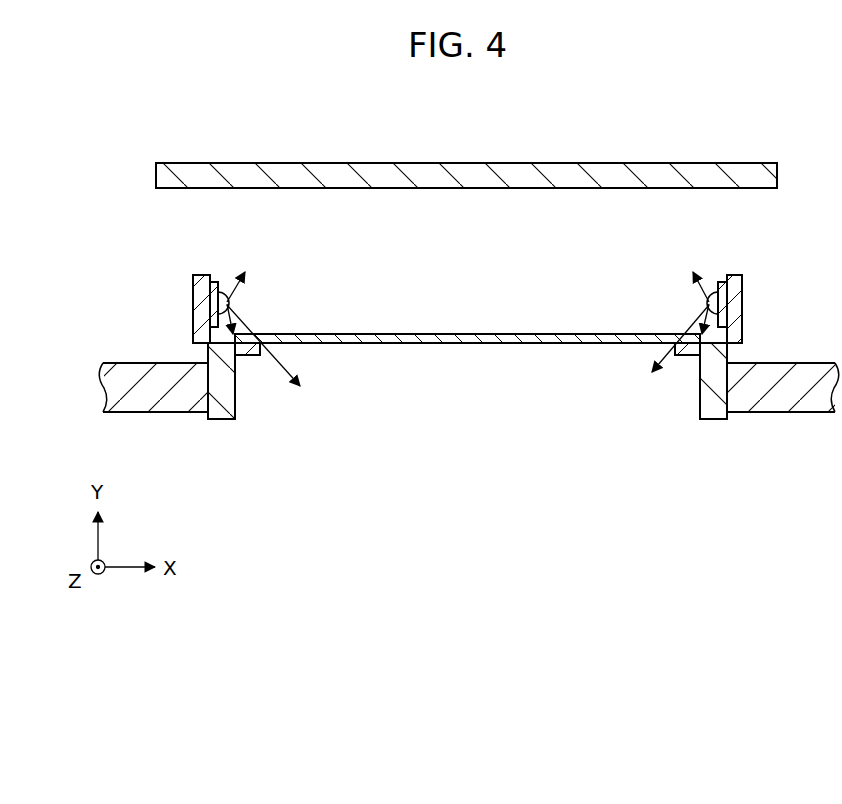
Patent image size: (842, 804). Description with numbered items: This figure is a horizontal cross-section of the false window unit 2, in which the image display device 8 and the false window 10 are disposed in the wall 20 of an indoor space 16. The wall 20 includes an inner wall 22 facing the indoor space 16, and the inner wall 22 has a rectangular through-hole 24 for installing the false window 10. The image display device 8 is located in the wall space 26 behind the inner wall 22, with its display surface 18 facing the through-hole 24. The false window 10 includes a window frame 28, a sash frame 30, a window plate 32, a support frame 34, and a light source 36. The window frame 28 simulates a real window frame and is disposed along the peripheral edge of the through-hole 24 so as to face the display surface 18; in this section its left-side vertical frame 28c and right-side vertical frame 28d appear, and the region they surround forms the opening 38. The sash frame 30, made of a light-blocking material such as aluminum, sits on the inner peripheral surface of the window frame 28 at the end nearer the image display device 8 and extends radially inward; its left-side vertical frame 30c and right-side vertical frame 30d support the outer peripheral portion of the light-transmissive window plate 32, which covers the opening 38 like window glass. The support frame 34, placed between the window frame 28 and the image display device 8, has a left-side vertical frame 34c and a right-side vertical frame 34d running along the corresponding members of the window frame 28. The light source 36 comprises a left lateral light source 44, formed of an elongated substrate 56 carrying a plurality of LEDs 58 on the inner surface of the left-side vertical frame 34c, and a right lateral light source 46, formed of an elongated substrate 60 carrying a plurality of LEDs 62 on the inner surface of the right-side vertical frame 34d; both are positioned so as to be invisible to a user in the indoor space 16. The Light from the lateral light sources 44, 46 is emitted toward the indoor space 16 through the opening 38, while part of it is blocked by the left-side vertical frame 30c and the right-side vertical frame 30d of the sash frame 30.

The false window unit 2 is at (727, 91).
The image display device 8 is at (778, 173).
The display surface 18 is at (734, 189).
The wall space 26 is at (477, 274).
The window plate 32 is at (449, 344).
The indoor space 16 is at (477, 479).
The support frame 34 is at (193, 295).
The left-side vertical frame 34c is at (193, 325).
The left lateral light source 44 is at (270, 263).
The substrate 56 is at (220, 284).
The LEDs 58 is at (226, 300).
The window frame 28 is at (228, 420).
The left-side vertical frame 28c is at (218, 420).
The opening 38 is at (235, 395).
The sash frame 30 is at (238, 357).
The left-side vertical frame 30c is at (250, 356).
The through-hole 24 is at (185, 415).
The light source 36 is at (731, 272).
The right-side vertical frame 34d is at (742, 310).
The right lateral light source 46 is at (671, 263).
The substrate 60 is at (717, 284).
The LEDs 62 is at (711, 300).
The right-side vertical frame 28d is at (712, 420).
The right-side vertical frame 30d is at (681, 348).
The false window 10 is at (690, 441).
The wall 20 is at (800, 416).
The inner wall 22 is at (767, 413).
The light Light is at (289, 357).